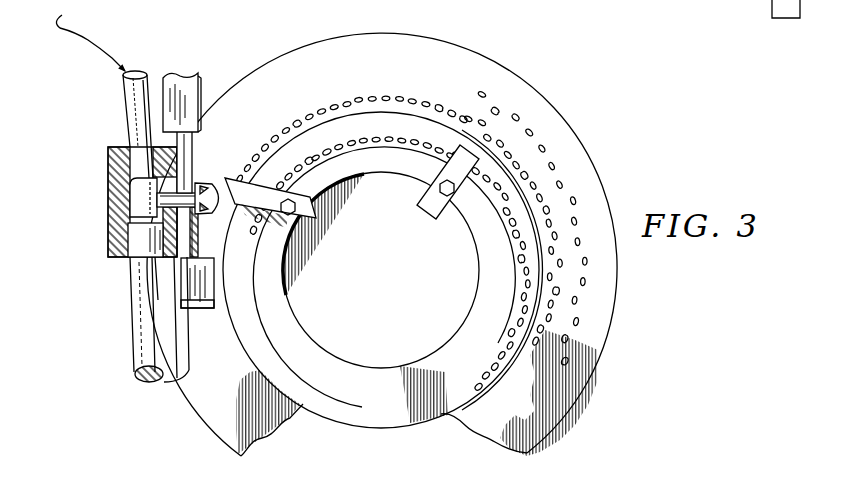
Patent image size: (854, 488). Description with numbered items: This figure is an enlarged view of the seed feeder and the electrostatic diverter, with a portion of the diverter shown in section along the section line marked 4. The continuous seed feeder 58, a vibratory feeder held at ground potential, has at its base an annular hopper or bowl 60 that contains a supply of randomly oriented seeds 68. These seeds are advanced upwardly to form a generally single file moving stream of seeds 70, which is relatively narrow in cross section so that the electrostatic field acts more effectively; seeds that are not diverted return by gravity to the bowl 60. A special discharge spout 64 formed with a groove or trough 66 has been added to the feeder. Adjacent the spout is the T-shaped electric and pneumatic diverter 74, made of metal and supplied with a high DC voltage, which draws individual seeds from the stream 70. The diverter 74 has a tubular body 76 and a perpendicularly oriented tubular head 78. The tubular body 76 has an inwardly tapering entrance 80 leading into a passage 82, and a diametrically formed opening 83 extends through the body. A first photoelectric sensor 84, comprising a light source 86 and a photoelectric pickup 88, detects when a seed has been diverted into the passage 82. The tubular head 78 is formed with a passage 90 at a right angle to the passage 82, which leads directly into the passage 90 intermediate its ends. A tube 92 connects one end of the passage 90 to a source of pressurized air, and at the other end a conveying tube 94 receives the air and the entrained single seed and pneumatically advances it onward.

The continuous seed feeder 58 is at (568, 123).
The annular hopper or bowl 60 is at (597, 178).
The discharge spout 64 is at (238, 176).
The groove or trough 66 is at (390, 272).
The supply of randomly oriented seeds 68 is at (452, 104).
The single file moving stream of seeds 70 is at (348, 98).
The T-shaped electric and pneumatic diverter 74 is at (108, 253).
The tubular body 76 is at (218, 228).
The tubular head 78 is at (108, 162).
The inwardly tapering entrance 80 is at (222, 208).
The passage 82 is at (127, 223).
The diametrically formed opening 83 is at (207, 184).
The first photoelectric sensor 84 is at (181, 74).
The light source 86 is at (187, 302).
The photoelectric pickup 88 is at (203, 97).
The passage 90 is at (108, 190).
The tube 92 is at (125, 95).
The conveying tube 94 is at (135, 344).
The section line 4- 4 is at (102, 208).